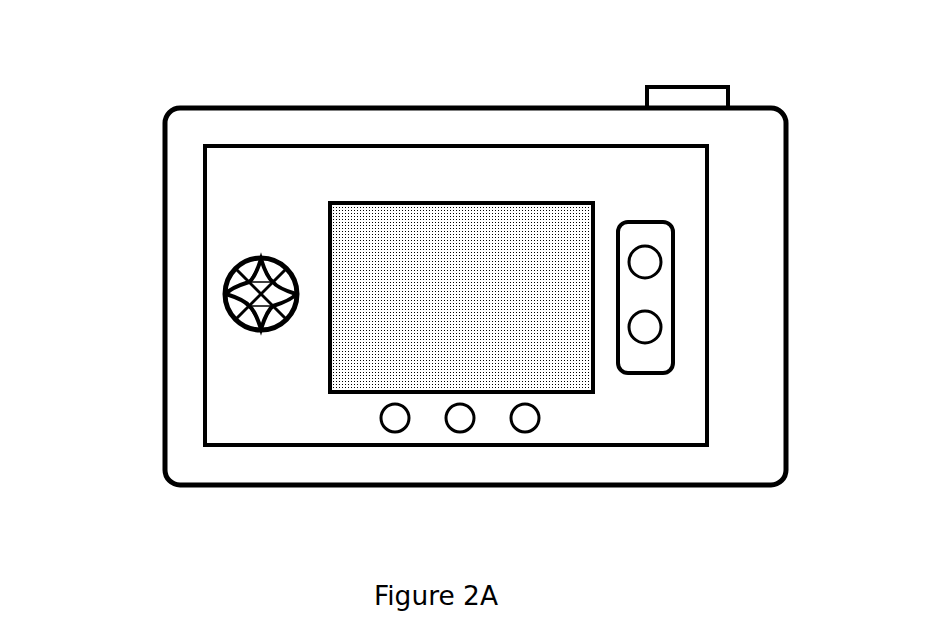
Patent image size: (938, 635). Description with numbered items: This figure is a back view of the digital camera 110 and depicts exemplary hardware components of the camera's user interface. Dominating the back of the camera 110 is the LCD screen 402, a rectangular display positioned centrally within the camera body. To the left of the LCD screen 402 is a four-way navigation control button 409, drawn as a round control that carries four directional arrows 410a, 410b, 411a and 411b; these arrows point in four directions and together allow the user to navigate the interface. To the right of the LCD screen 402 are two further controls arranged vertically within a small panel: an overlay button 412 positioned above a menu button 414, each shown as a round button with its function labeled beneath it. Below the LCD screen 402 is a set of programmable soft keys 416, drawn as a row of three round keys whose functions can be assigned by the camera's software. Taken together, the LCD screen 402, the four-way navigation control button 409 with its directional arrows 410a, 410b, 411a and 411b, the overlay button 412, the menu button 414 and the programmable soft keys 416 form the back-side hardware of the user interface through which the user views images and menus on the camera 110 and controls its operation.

The camera 110 is at (491, 44).
The LCD screen 402 is at (461, 200).
The four-way navigation control button 409 is at (258, 214).
The directional arrow 410a is at (230, 287).
The directional arrow 410b is at (234, 318).
The directional arrow 411a is at (250, 261).
The directional arrow 411b is at (256, 333).
The overlay button 412 is at (648, 246).
The menu button 414 is at (648, 311).
The programmable soft keys 416 is at (525, 433).